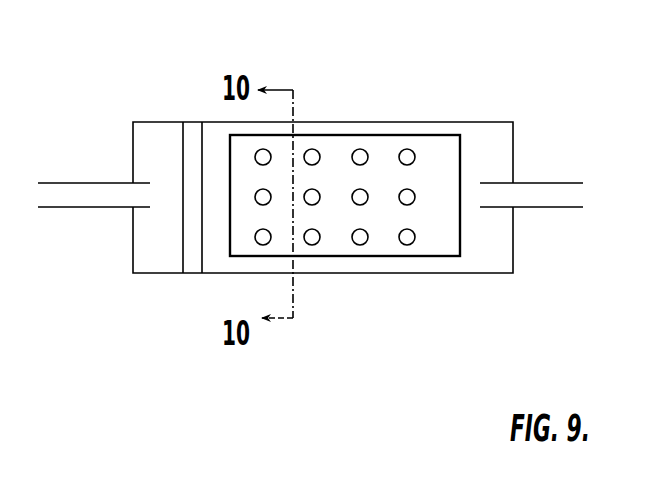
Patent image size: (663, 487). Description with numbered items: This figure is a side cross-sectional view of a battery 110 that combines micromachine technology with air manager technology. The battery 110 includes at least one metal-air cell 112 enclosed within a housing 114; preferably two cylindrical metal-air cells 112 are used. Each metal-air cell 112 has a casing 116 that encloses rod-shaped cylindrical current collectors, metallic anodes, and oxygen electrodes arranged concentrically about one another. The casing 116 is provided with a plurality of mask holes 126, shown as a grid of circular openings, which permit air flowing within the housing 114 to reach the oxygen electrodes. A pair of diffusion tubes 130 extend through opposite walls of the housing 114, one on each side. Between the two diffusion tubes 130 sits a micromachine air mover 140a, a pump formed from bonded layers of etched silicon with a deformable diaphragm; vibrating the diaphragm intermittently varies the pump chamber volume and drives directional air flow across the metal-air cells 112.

The battery 110 is at (133, 60).
The metal-air cell 112 is at (392, 148).
The housing 114 is at (514, 135).
The casing 116 is at (438, 145).
The mask holes 126 is at (312, 245).
The diffusion tubes 130 is at (82, 193).
The micromachine air mover 140a is at (193, 135).